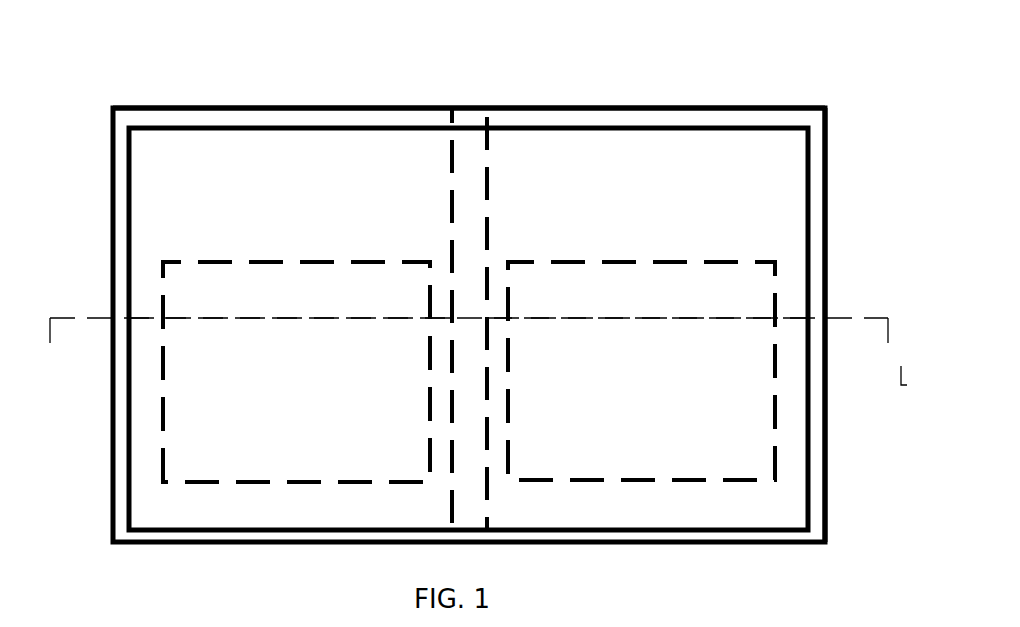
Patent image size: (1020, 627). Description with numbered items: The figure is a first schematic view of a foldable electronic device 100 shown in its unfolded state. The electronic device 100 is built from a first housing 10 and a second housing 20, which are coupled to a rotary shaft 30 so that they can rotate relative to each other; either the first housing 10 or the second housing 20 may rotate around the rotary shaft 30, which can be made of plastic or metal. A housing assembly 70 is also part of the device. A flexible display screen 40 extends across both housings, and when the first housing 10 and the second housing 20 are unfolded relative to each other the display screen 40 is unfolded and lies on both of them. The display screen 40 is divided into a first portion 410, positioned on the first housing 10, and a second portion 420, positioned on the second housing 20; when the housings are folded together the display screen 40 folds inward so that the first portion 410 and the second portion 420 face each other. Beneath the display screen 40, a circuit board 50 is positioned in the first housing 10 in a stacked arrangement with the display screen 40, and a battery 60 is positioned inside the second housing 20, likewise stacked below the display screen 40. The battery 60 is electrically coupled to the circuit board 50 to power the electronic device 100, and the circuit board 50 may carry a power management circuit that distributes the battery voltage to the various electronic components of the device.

The electronic device 100 is at (410, 31).
The first housing 10 is at (676, 107).
The second housing 20 is at (213, 106).
The rotary shaft 30 is at (470, 155).
The display screen 40 is at (127, 177).
The first portion 410 is at (763, 215).
The second portion 420 is at (250, 235).
The circuit board 50 is at (780, 290).
The battery 60 is at (160, 427).
The housing assembly 70 is at (783, 118).